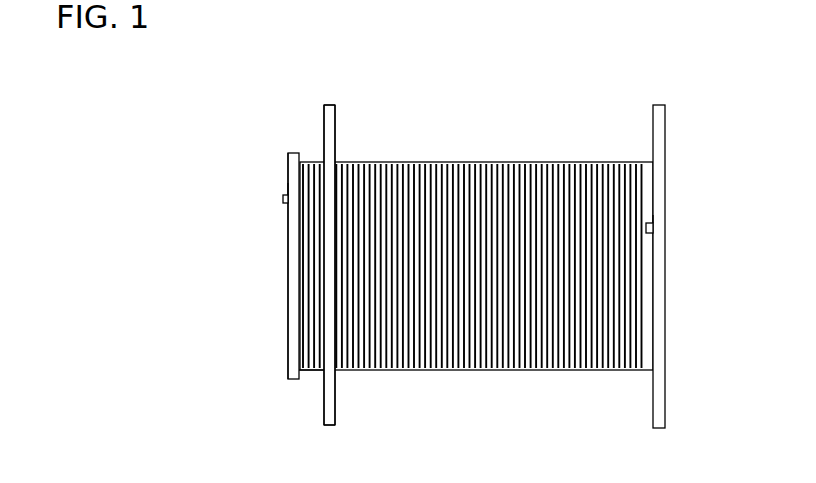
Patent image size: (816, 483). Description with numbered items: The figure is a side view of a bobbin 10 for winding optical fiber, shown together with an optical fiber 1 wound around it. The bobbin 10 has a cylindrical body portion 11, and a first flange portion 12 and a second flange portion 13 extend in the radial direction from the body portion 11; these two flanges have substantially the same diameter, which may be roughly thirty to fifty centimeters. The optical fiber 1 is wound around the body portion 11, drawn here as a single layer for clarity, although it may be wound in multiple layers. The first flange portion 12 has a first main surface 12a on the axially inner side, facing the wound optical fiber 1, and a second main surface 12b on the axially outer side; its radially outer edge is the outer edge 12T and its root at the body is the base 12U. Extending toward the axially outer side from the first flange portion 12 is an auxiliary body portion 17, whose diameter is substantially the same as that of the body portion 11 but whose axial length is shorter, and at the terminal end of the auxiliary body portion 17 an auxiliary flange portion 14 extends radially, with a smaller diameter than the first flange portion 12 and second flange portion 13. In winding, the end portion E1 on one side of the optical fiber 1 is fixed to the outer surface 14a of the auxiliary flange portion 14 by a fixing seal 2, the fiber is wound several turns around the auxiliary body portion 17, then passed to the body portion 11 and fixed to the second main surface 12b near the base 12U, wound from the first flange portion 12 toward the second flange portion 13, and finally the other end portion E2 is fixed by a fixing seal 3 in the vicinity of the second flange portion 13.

The optical fiber 1 is at (447, 162).
The fixing seal 2 is at (285, 203).
The fixing seal 3 is at (653, 231).
The bobbin 10 is at (257, 86).
The body portion 11 is at (600, 148).
The first flange portion 12 is at (330, 428).
The outer edge 12T is at (325, 118).
The base 12U is at (335, 371).
The first main surface 12a is at (336, 135).
The second main surface 12b is at (324, 135).
The second flange portion 13 is at (662, 105).
The auxiliary flange portion 14 is at (292, 357).
The outer surface 14a is at (288, 290).
The auxiliary body portion 17 is at (312, 372).
The end portion E1 is at (288, 182).
The end portion E2 is at (652, 223).